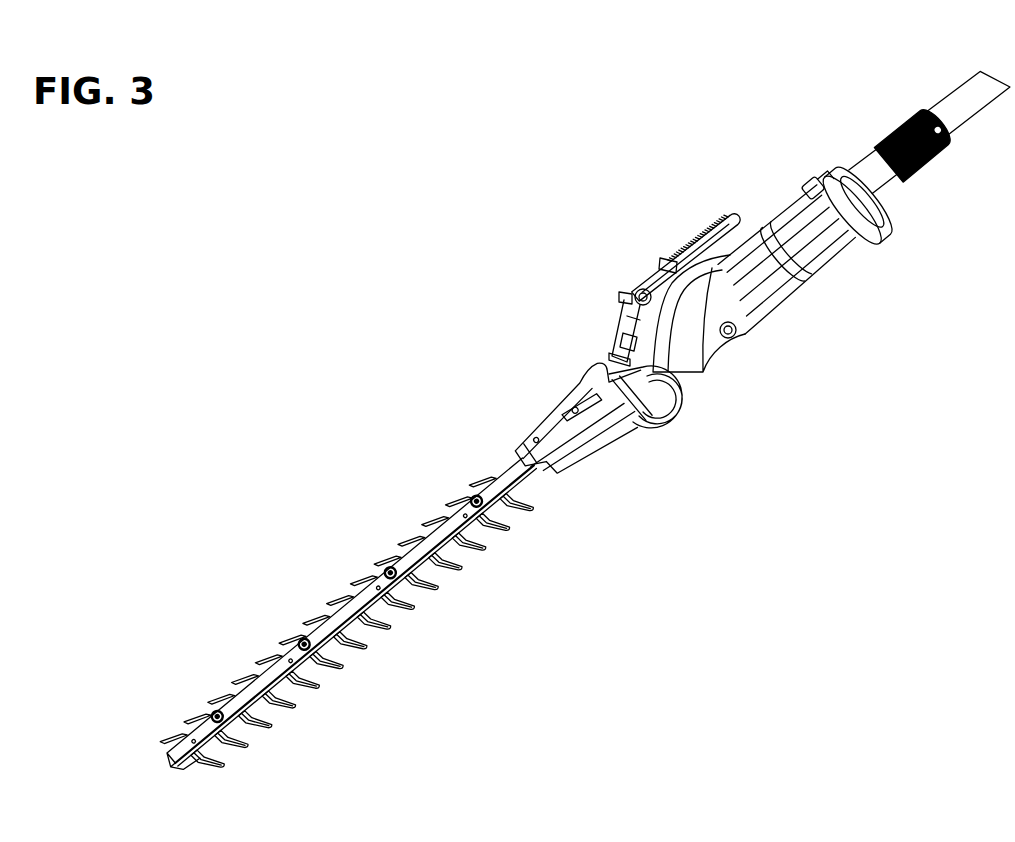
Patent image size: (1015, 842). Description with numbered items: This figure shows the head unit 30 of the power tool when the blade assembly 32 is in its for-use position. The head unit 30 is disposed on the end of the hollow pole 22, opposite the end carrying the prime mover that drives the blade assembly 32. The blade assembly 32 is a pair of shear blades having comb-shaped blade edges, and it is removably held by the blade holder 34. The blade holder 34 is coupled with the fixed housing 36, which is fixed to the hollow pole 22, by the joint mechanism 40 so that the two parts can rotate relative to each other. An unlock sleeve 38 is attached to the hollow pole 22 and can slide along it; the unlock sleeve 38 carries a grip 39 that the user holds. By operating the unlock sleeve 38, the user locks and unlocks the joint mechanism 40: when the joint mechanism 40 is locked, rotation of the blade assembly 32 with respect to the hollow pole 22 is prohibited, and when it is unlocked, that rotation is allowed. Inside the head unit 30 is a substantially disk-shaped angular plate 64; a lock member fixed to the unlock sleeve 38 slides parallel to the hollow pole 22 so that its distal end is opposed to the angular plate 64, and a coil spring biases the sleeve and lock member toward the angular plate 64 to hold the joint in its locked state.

The hollow pole 22 is at (955, 104).
The head unit 30 is at (819, 339).
The blade assembly 32 is at (247, 674).
The blade holder 34 is at (597, 365).
The fixed housing 36 is at (773, 220).
The unlock sleeve 38 is at (832, 173).
The grip 39 is at (892, 138).
The joint mechanism 40 is at (722, 347).
The angular plate 64 is at (688, 258).